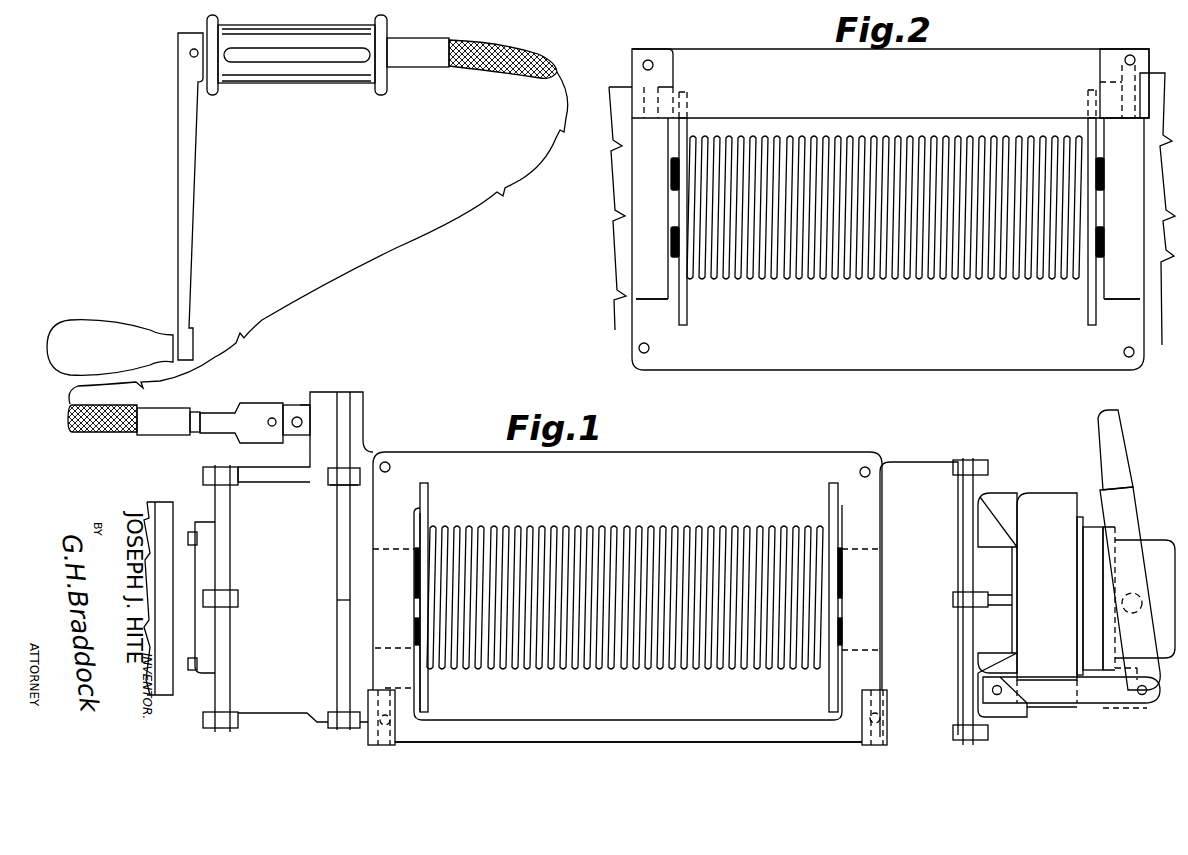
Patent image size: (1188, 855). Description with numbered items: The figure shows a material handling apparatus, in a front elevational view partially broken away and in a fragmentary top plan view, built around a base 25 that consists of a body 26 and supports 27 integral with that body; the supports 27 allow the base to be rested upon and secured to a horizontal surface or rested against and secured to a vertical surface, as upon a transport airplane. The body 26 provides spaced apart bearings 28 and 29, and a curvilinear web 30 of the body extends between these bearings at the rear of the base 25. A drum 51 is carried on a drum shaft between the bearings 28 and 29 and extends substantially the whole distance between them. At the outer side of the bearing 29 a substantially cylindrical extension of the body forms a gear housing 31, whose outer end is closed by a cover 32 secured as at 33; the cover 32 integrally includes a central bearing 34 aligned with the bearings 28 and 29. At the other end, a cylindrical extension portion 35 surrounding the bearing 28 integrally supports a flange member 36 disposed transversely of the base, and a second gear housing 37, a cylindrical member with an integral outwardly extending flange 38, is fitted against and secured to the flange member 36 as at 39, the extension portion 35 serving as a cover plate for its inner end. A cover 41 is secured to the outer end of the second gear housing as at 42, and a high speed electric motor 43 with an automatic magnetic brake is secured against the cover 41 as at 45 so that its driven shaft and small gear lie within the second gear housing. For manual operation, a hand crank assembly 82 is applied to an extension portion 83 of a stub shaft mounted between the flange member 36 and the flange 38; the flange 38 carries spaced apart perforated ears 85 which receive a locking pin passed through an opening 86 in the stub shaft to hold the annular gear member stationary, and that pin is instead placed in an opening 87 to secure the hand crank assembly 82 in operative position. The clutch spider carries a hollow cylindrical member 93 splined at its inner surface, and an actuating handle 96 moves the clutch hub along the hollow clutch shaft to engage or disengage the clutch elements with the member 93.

In FIG. 1, the base 25 is at (700, 478).
In FIG. 2, the base 25 is at (890, 228).
In FIG. 1, the body 26 is at (620, 478).
In FIG. 2, the body 26 is at (888, 263).
In FIG. 1, the supports 27 is at (865, 460).
In FIG. 2, the supports 27 is at (634, 50).
In FIG. 1, the bearing 28 is at (392, 632).
In FIG. 1, the bearing 29 is at (852, 620).
In FIG. 1, the curvilinear web 30 is at (662, 695).
In FIG. 1, the gear housing 31 is at (910, 487).
In FIG. 2, the gear housing 31 is at (892, 235).
In FIG. 1, the cover 32 is at (975, 492).
In FIG. 1, the securing means 33 is at (970, 458).
In FIG. 1, the bearing 34 is at (990, 560).
In FIG. 1, the cylindrical extension portion 35 is at (360, 590).
In FIG. 1, the flange member 36 is at (347, 422).
In FIG. 1, the second gear housing 37 is at (272, 688).
In FIG. 1, the flange 38 is at (328, 408).
In FIG. 1, the securing means 39 is at (342, 522).
In FIG. 1, the cover 41 is at (216, 520).
In FIG. 1, the securing means 42 is at (217, 523).
In FIG. 1, the electric motor 43 is at (166, 520).
In FIG. 1, the securing means 45 is at (212, 678).
In FIG. 1, the drum 51 is at (598, 650).
In FIG. 2, the drum 51 is at (887, 211).
In FIG. 1, the hand crank assembly 82 is at (411, 57).
In FIG. 1, the extension portion 83 is at (292, 405).
In FIG. 1, the perforated ears 85 is at (301, 405).
In FIG. 1, the opening 86 is at (297, 428).
In FIG. 1, the opening 87 is at (268, 425).
In FIG. 1, the hollow cylindrical member 93 is at (1050, 515).
In FIG. 1, the actuating handle 96 is at (1102, 440).